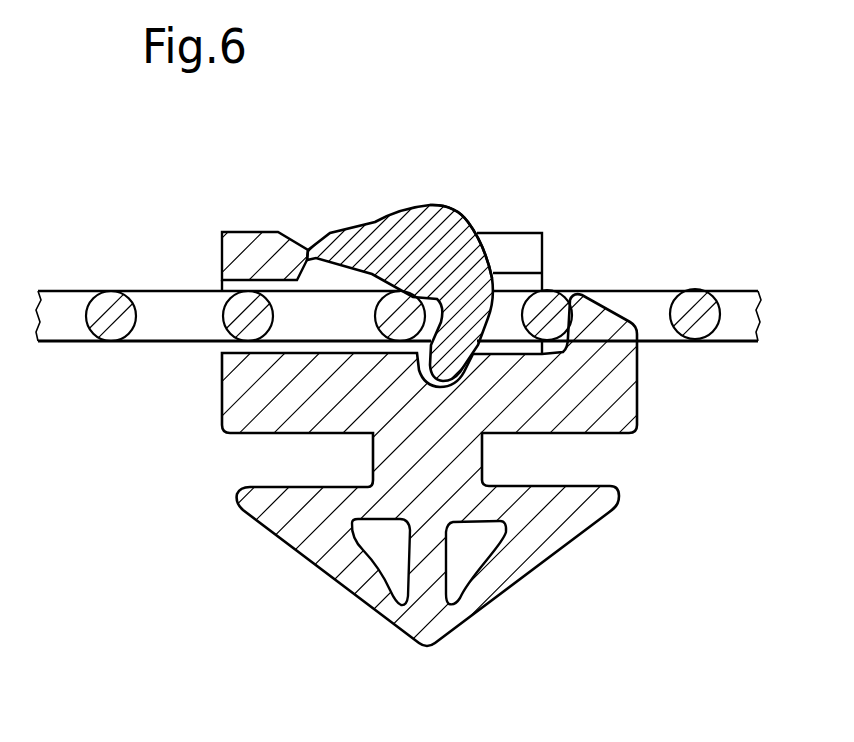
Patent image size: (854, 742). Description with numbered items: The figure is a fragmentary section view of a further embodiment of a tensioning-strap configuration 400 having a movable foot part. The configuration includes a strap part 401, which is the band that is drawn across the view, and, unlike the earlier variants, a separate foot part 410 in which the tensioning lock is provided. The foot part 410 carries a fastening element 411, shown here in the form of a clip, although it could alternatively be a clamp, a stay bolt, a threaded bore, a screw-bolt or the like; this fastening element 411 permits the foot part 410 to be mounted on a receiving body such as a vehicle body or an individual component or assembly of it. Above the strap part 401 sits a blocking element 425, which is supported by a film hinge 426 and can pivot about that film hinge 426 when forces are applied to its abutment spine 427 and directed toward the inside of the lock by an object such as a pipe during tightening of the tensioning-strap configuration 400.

The tensioning-strap configuration 400 is at (428, 156).
The strap part 401 is at (638, 304).
The foot part 410 is at (603, 403).
The fastening element 411 is at (372, 576).
The blocking element 425 is at (395, 247).
The film hinge 426 is at (308, 248).
The abutment spine 427 is at (458, 221).